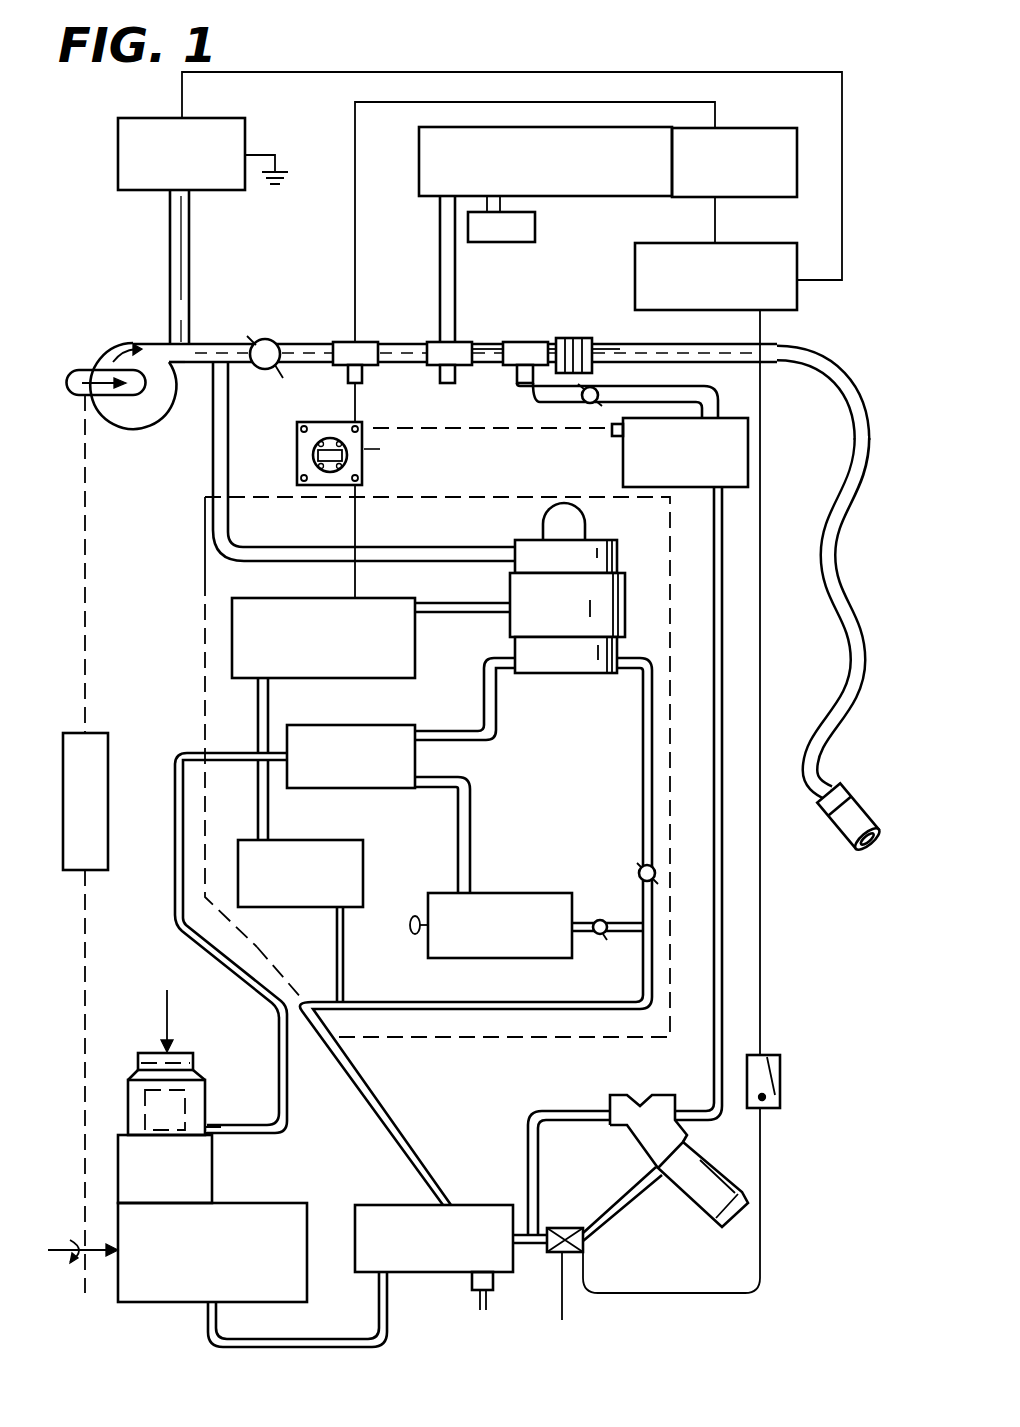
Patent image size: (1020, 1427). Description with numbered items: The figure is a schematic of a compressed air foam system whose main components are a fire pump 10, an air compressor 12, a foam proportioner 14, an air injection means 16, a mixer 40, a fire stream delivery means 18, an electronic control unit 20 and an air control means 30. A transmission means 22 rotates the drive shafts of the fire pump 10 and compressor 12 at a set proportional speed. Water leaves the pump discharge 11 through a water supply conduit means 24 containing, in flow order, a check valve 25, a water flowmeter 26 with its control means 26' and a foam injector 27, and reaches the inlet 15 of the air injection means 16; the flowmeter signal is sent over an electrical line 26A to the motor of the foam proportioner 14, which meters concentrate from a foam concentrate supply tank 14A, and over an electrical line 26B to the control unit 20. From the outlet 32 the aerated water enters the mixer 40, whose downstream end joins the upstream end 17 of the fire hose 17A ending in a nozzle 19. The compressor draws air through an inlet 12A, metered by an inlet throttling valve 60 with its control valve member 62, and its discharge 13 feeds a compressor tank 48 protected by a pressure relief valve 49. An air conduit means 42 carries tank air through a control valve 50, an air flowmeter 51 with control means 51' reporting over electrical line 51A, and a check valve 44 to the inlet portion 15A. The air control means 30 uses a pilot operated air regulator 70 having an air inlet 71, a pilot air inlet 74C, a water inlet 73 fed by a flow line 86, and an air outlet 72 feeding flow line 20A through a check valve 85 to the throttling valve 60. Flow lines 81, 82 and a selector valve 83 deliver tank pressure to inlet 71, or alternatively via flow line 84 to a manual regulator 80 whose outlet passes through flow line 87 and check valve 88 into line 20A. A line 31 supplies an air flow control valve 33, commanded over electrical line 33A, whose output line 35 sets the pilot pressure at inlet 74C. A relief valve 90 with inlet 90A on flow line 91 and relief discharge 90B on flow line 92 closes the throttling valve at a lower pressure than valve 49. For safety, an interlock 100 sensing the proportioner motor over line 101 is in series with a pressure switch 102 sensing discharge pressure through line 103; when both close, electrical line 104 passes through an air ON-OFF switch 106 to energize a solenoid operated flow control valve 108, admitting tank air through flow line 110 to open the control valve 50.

The fire pump 10 is at (111, 341).
The discharge 11 is at (164, 343).
The air compressor 12 is at (137, 1305).
The inlet 12A is at (203, 1173).
The discharge 13 is at (218, 1323).
The foam proportioner 14 is at (419, 157).
The foam concentrate supply tank 14A is at (537, 233).
The inlet 15 is at (492, 348).
The inlet portion 15A is at (509, 372).
The air injection means 16 is at (527, 341).
The upstream end 17 is at (603, 362).
The fire hose 17A is at (822, 370).
The fire stream delivery means 18 is at (834, 528).
The nozzle 19 is at (836, 790).
The electronic control unit 20 is at (297, 437).
The flow line 20A is at (459, 1003).
The transmission means 22 is at (108, 748).
The water supply conduit means 24 is at (310, 342).
The check valve 25 is at (267, 341).
The water flowmeter 26 is at (371, 328).
The control means 26' is at (322, 385).
The electrical line 26A is at (356, 248).
The electrical line 26B is at (358, 400).
The foam injector 27 is at (457, 341).
The air control means 30 is at (205, 571).
The line 31 is at (258, 728).
The outlet 32 is at (554, 343).
The air flow control valve 33 is at (300, 598).
The electrical line 33A is at (357, 524).
The line 35 is at (431, 603).
The mixer 40 is at (583, 339).
The air conduit means 42 is at (708, 396).
The check valve 44 is at (584, 403).
The compressor tank 48 is at (470, 1205).
The pressure relief valve 49 is at (470, 1283).
The control valve 50 is at (622, 1095).
The air flowmeter 51 is at (658, 461).
The control means 51' is at (595, 442).
The electrical line 51A is at (522, 431).
The inlet throttling valve 60 is at (201, 1088).
The control valve member 62 is at (181, 1062).
The pilot operated air regulator 70 is at (570, 540).
The air inlet 71 is at (504, 670).
The air outlet 72 is at (628, 666).
The water inlet 73 is at (508, 548).
The pilot air inlet 74C is at (501, 612).
The manual regulator 80 is at (547, 893).
The flow line 81 is at (174, 841).
The flow line 82 is at (484, 684).
The selector valve 83 is at (322, 725).
The flow line 84 is at (473, 816).
The check valve 85 is at (641, 866).
The flow line 86 is at (216, 460).
The flow line 87 is at (597, 921).
The check valve 88 is at (605, 937).
The relief valve 90 is at (366, 883).
The inlet 90A is at (271, 840).
The relief discharge 90B is at (334, 915).
The flow line 91 is at (258, 815).
The flow line 92 is at (345, 986).
The interlock 100 is at (635, 279).
The line 101 is at (717, 232).
The pressure switch 102 is at (156, 190).
The line 103 is at (190, 268).
The electrical line 104 is at (483, 72).
The air ON-OFF switch 106 is at (777, 1054).
The solenoid operated flow control valve 108 is at (585, 1252).
The flow line 110 is at (626, 1209).